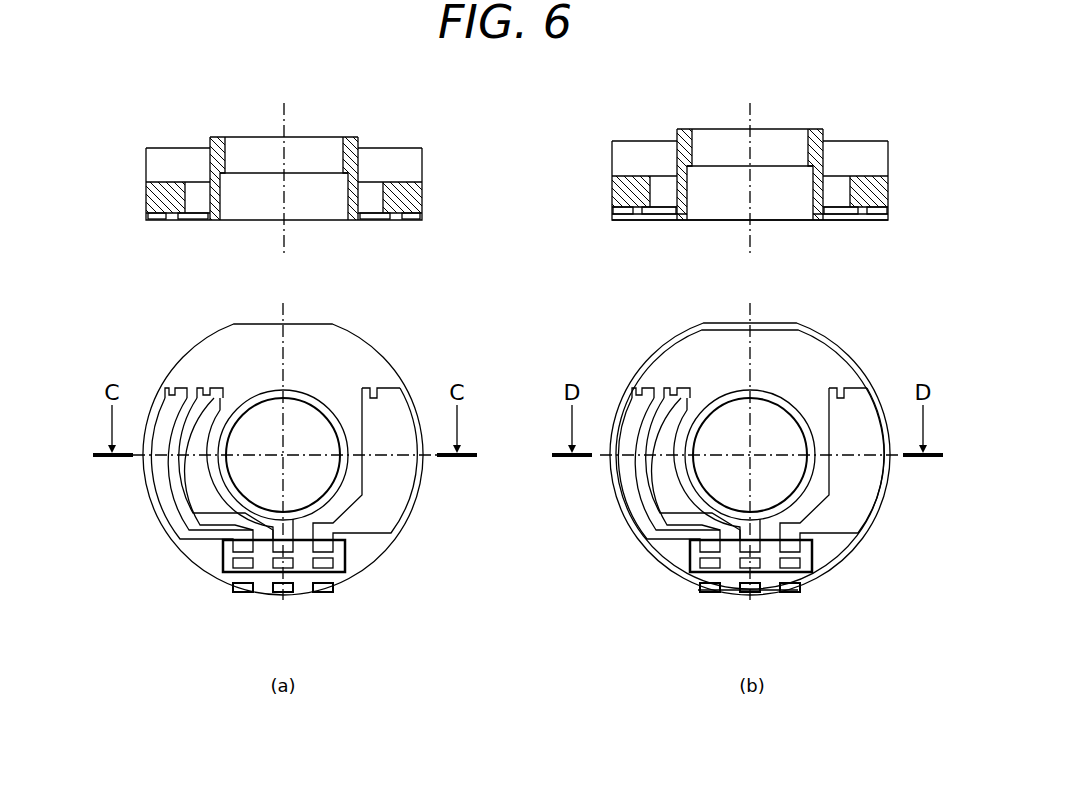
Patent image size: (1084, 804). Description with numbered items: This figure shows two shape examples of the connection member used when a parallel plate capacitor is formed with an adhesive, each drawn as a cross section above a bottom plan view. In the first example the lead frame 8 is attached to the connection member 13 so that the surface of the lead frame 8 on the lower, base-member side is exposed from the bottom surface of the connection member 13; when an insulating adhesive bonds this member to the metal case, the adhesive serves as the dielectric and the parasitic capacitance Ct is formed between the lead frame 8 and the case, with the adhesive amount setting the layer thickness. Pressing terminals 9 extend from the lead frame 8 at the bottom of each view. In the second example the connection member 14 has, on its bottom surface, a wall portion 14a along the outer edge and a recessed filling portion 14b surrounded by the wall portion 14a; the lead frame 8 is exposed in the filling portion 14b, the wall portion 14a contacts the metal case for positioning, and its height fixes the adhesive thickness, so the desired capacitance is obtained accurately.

The lead frame 8 is at (496, 440).
The pressing terminal 9 is at (553, 625).
The connection member 13 is at (298, 331).
The connection member 14 is at (764, 331).
The wall portion 14a is at (746, 403).
The filling portion 14b is at (750, 254).